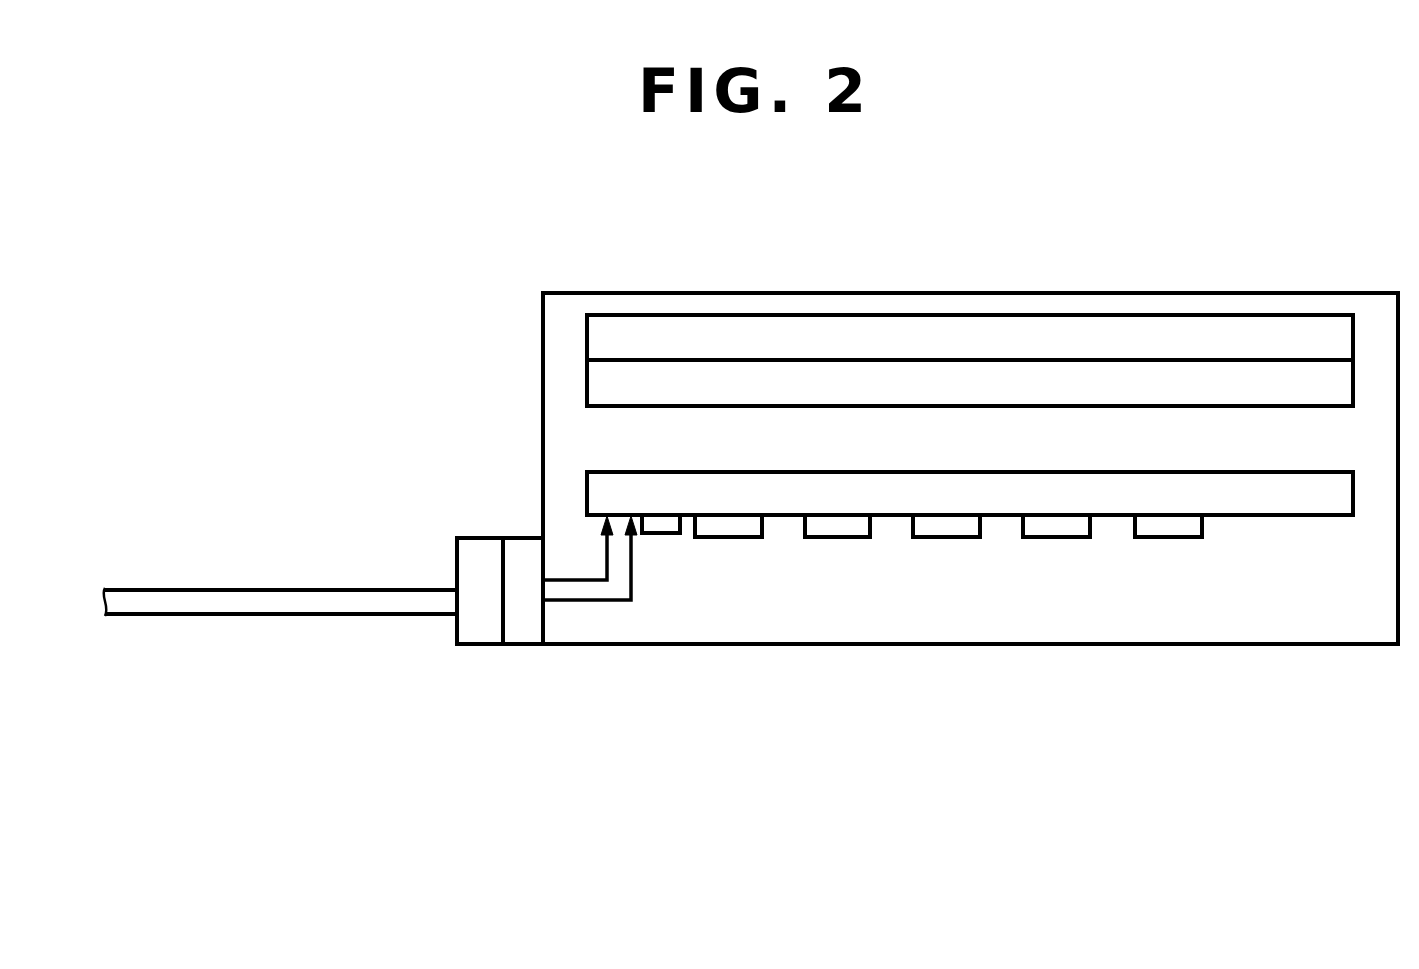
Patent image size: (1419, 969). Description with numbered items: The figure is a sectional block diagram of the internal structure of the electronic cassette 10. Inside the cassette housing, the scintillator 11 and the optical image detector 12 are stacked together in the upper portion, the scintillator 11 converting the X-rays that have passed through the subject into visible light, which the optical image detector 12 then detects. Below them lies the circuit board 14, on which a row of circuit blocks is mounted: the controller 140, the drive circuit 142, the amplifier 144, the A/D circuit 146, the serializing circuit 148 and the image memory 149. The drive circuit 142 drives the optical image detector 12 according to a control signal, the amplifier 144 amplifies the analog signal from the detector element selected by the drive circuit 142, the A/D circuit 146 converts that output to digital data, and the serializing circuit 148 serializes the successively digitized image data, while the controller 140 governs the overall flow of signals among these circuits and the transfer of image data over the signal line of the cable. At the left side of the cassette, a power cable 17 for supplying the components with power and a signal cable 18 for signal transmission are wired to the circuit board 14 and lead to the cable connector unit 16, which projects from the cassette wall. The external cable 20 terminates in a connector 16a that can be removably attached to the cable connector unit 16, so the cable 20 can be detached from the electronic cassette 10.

The electronic cassette 10 is at (1343, 293).
The scintillator 11 is at (1107, 335).
The optical image detector 12 is at (1223, 377).
The circuit board 14 is at (1297, 515).
The controller 140 is at (665, 535).
The drive circuit 142 is at (745, 538).
The amplifier 144 is at (838, 538).
The A/D circuit 146 is at (950, 538).
The serializing circuit 148 is at (1058, 538).
The image memory 149 is at (1170, 538).
The cable connector unit 16 is at (515, 538).
The connector 16a is at (481, 646).
The power cable 17 is at (586, 602).
The signal cable 18 is at (585, 575).
The cable 20 is at (254, 590).